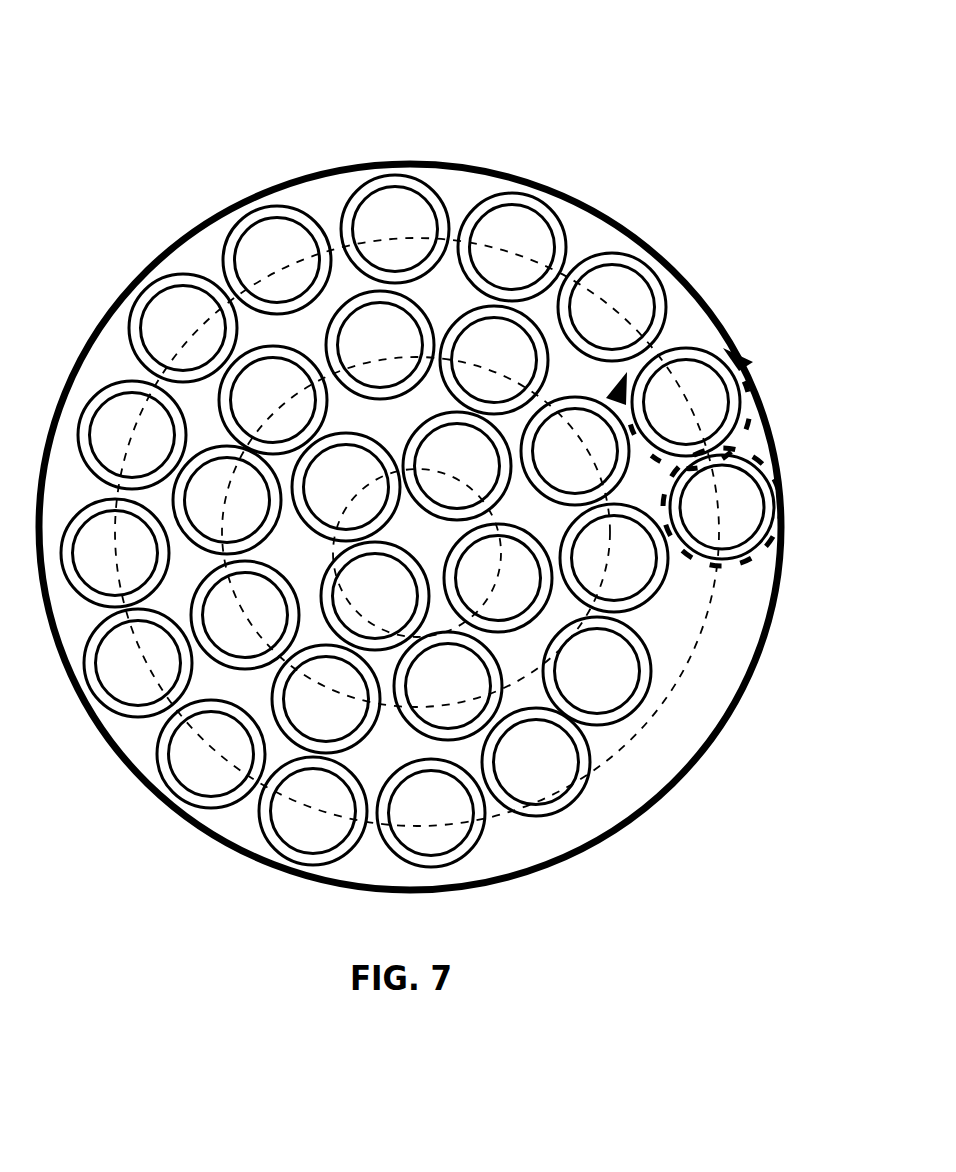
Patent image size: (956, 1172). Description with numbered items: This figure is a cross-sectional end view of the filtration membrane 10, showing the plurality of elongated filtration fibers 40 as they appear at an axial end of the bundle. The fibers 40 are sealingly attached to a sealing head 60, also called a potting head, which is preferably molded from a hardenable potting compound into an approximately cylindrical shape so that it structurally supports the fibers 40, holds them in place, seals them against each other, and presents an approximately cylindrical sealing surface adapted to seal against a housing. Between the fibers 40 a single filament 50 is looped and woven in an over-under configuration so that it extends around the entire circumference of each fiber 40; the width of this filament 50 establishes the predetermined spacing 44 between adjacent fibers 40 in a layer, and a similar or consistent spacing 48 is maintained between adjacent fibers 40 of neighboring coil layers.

The heat exchanger / tube bundle assembly 10 is at (258, 123).
The sealing head 60 is at (137, 278).
The elongated filtration fibers 40 is at (615, 260).
The spacing between adjacent elongated filtration fibers 44 is at (725, 443).
The filament 50 is at (780, 488).
The spacing between adjacent elongated filtration fibers between coil layers 48 is at (677, 545).